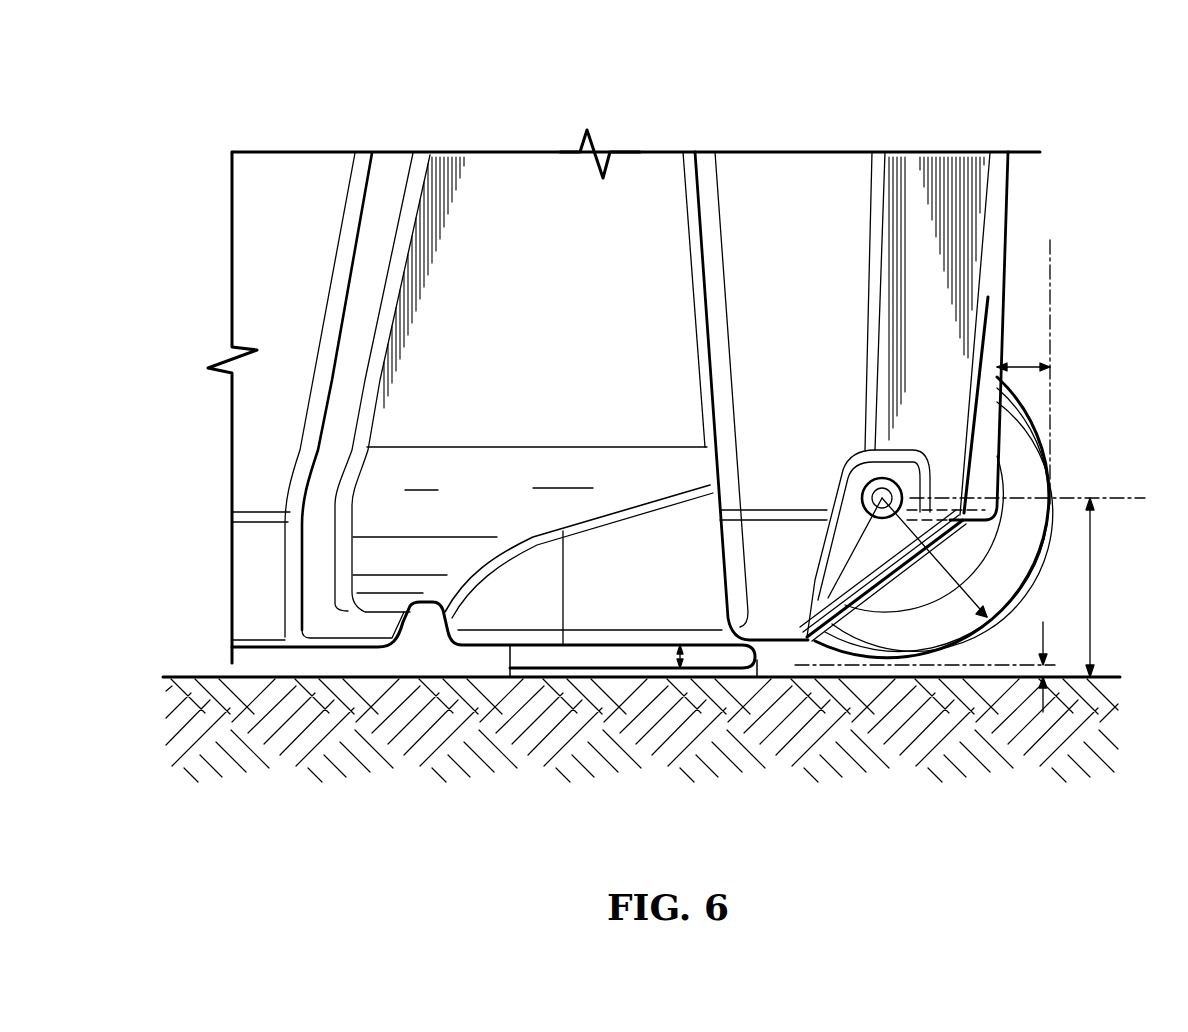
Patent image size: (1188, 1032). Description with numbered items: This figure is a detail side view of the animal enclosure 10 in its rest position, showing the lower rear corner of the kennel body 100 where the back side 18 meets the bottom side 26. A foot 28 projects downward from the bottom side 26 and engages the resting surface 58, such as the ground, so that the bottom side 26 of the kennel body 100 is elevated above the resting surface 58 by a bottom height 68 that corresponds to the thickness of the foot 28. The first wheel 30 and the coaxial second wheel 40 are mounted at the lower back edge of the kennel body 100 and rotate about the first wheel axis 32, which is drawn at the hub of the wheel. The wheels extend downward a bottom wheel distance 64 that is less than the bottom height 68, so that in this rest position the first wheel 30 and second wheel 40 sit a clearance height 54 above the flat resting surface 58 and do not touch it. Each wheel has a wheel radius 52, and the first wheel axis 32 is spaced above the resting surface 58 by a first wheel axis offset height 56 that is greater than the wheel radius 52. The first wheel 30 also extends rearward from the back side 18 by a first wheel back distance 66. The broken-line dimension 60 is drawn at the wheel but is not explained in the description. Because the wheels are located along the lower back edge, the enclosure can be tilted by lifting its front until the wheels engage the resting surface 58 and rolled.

The animal enclosure 10 is at (933, 72).
The kennel body 100 is at (515, 165).
The back side 18 is at (1000, 254).
The bottom side 26 is at (360, 647).
The foot 28 is at (620, 660).
The first wheel 30 is at (989, 517).
The second wheel 40 is at (1040, 440).
The first wheel axis 32 is at (875, 488).
The wheel radius 52 is at (1010, 553).
The clearance height 54 is at (1043, 622).
The first wheel axis offset height 56 is at (1092, 617).
The resting surface 58 is at (208, 675).
The wheel radius 60 is at (897, 505).
The bottom wheel distance 64 is at (800, 660).
The first wheel back distance 66 is at (1025, 366).
The bottom height 68 is at (678, 660).